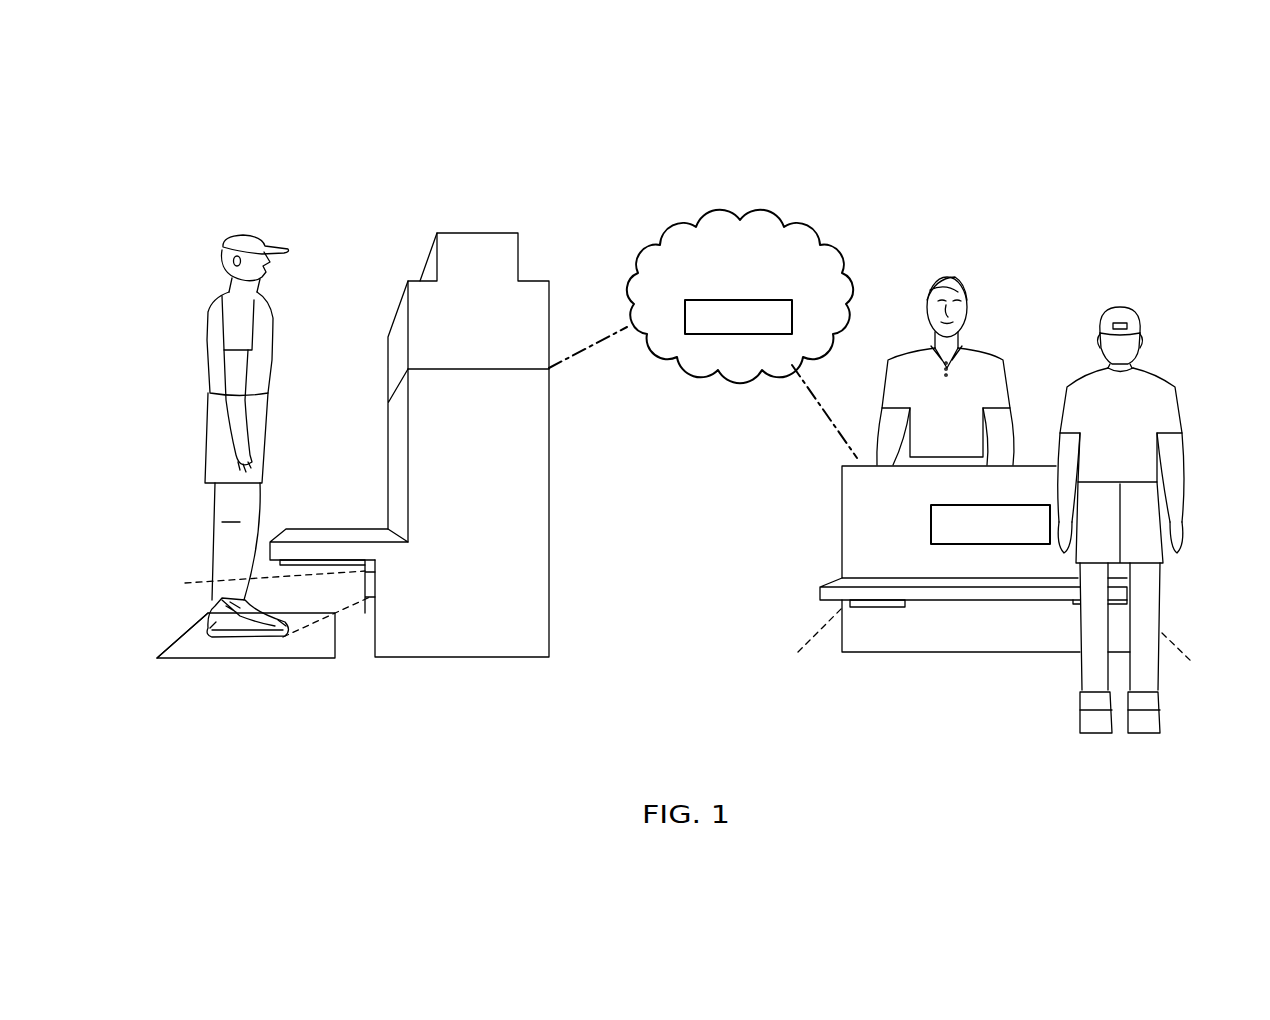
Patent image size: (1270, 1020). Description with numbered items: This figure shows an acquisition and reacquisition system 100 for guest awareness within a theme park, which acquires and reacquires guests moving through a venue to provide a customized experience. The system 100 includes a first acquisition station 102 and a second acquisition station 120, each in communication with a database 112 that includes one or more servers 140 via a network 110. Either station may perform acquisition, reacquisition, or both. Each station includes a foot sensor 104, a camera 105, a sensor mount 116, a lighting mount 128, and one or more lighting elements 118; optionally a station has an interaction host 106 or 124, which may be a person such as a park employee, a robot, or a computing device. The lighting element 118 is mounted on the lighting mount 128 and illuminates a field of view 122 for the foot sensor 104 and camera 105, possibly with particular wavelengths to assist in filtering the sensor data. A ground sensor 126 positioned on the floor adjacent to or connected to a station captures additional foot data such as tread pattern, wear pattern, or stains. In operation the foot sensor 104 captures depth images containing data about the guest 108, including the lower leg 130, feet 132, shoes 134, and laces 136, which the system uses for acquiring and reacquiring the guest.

The acquisition and reacquisition system 100 is at (840, 162).
The first acquisition station 102 is at (1173, 283).
The foot sensor 104 is at (367, 614).
The camera 105 is at (367, 578).
The interaction host 106 is at (975, 342).
The guest 108 is at (212, 357).
The network 110 is at (840, 248).
The database 112 is at (733, 245).
The sensor mount 116 is at (868, 508).
The lighting element 118 is at (305, 558).
The second acquisition station 120 is at (553, 172).
The field of view 122 is at (818, 645).
The interaction host 124 is at (424, 303).
The ground sensor 126 is at (215, 654).
The lighting mount 128 is at (353, 547).
The lower leg 130 is at (233, 546).
The feet 132 is at (207, 633).
The shoes 134 is at (207, 628).
The laces 136 is at (262, 606).
The server 140 is at (735, 337).